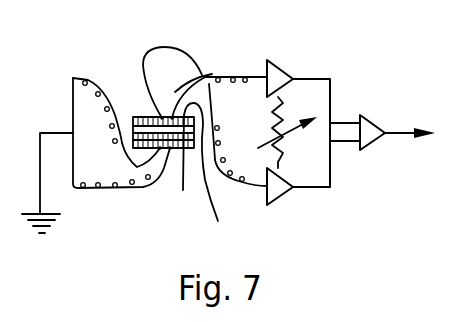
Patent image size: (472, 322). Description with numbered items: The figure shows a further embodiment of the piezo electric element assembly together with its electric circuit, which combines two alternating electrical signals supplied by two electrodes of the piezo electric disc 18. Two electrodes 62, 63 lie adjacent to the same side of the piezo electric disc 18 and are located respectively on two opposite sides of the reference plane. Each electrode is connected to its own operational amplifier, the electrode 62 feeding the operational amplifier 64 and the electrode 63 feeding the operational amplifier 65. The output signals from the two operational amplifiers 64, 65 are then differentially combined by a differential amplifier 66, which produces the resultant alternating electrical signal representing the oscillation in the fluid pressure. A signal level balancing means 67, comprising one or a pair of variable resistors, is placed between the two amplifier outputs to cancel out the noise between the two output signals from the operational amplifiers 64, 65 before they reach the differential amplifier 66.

The electrode 62 is at (146, 117).
The electrode 63 is at (221, 158).
The piezo electric disc 18 is at (175, 148).
The operational amplifier 64 is at (277, 63).
The operational amplifier 65 is at (280, 196).
The differential amplifier 66 is at (368, 123).
The signal level balancing means 67 is at (290, 135).